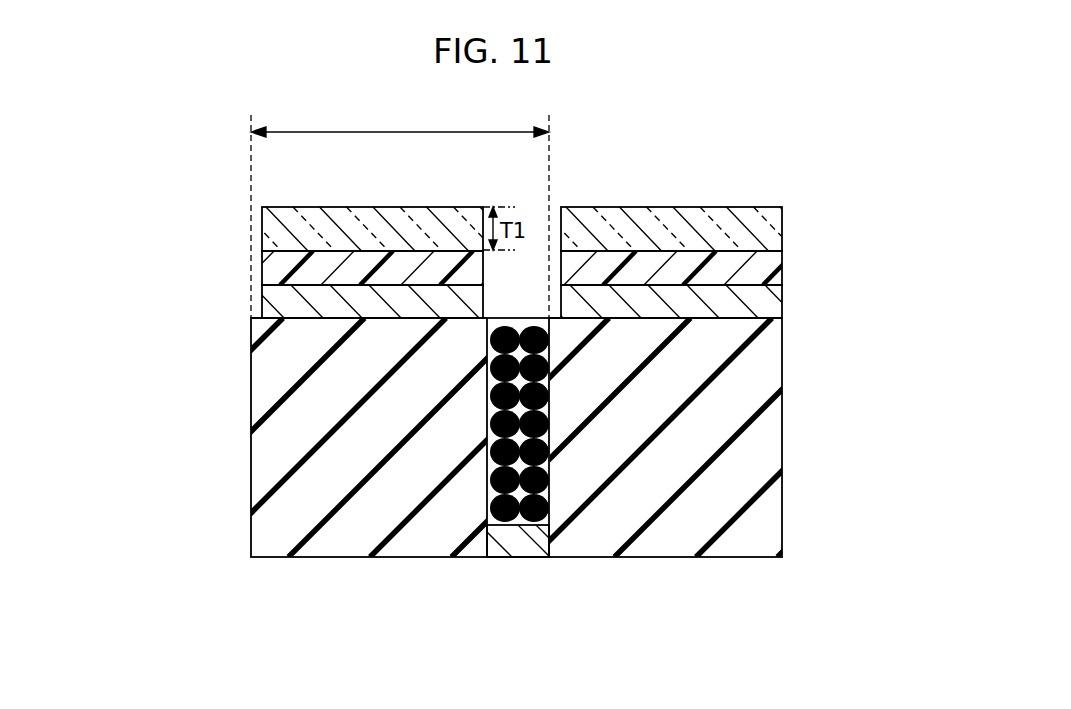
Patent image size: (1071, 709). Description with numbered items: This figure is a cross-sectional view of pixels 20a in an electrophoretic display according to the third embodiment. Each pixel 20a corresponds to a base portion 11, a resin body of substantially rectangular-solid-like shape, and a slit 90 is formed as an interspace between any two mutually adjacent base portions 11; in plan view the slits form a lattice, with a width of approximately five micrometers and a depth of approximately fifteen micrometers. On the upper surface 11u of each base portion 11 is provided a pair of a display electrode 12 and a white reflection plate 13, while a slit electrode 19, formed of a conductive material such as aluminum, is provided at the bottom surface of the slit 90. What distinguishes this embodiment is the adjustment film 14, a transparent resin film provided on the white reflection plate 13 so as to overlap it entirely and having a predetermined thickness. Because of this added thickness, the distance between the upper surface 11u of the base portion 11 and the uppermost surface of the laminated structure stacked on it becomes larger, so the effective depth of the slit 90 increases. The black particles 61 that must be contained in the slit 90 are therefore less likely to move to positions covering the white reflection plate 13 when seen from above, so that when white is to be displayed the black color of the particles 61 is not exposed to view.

The base portion 11 is at (262, 444).
The upper surface of base portion 11u is at (292, 318).
The display electrode 12 is at (263, 291).
The white reflection plate 13 is at (263, 262).
The adjustment film 14 is at (263, 226).
The slit electrode 19 is at (505, 558).
The black particles 61 is at (541, 512).
The slit 90 is at (538, 297).
The pixel 20a is at (400, 212).